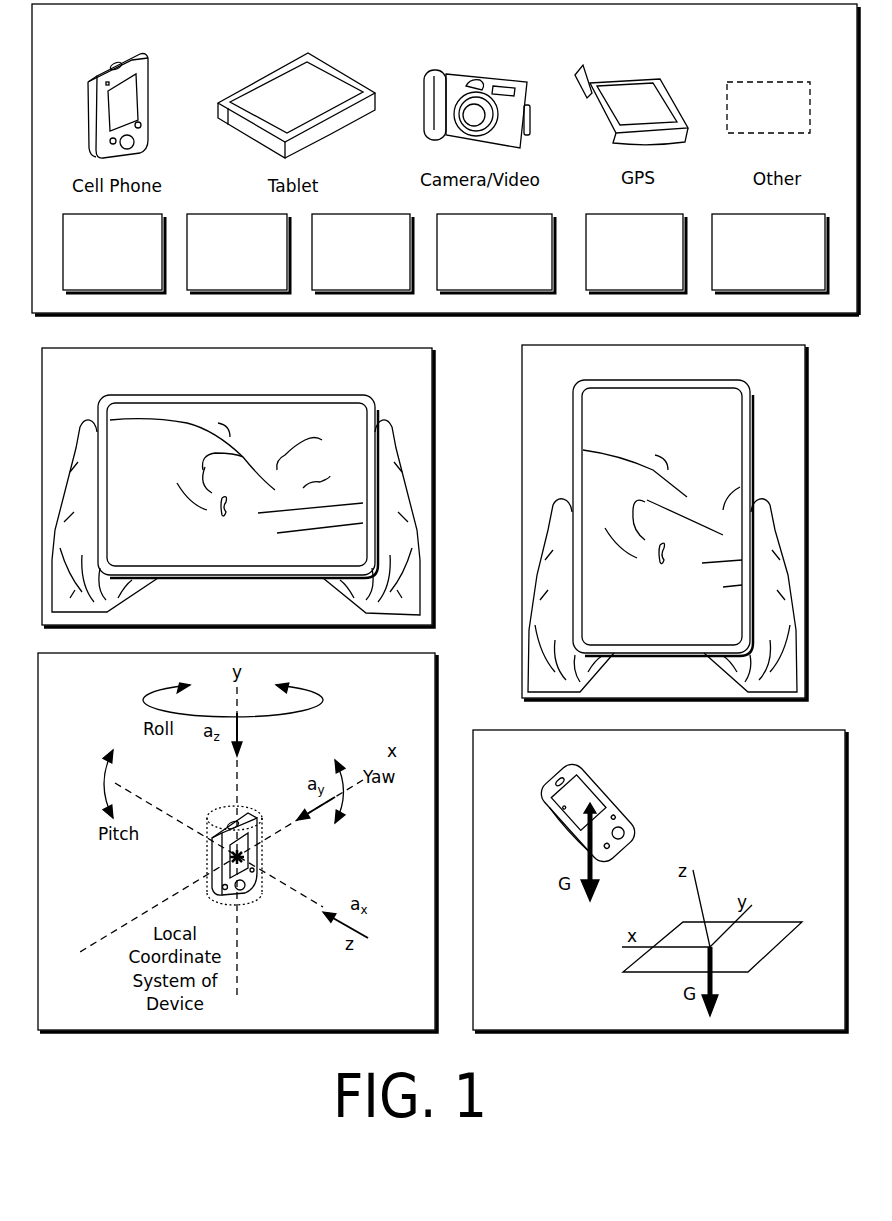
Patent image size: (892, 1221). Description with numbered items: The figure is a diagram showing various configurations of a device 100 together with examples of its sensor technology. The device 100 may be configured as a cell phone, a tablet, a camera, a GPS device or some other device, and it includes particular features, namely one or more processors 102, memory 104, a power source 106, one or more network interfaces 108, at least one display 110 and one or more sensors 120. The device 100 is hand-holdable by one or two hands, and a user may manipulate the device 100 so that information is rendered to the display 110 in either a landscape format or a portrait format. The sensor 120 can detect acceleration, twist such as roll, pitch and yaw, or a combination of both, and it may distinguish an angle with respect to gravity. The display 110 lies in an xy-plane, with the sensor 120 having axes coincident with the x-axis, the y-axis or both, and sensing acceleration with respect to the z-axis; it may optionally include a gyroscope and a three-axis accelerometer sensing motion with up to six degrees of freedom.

The device 100 is at (545, 815).
The processors 102 is at (114, 253).
The memory 104 is at (238, 253).
The power source 106 is at (362, 253).
The network interfaces 108 is at (496, 253).
The display 110 is at (245, 856).
The sensor 120 is at (172, 870).